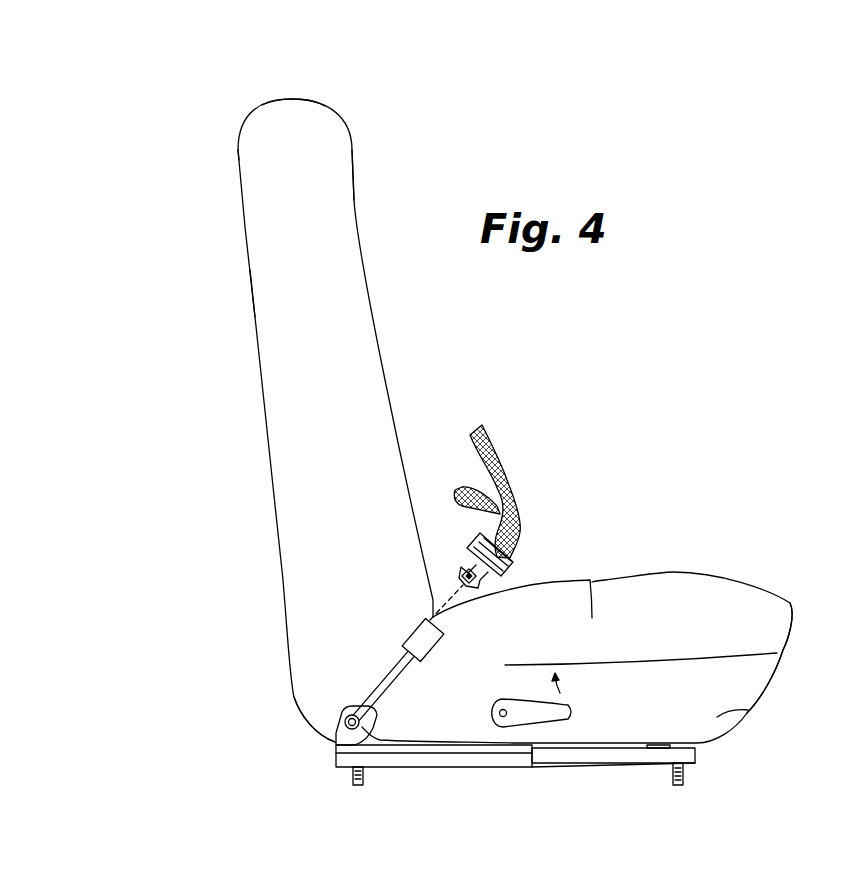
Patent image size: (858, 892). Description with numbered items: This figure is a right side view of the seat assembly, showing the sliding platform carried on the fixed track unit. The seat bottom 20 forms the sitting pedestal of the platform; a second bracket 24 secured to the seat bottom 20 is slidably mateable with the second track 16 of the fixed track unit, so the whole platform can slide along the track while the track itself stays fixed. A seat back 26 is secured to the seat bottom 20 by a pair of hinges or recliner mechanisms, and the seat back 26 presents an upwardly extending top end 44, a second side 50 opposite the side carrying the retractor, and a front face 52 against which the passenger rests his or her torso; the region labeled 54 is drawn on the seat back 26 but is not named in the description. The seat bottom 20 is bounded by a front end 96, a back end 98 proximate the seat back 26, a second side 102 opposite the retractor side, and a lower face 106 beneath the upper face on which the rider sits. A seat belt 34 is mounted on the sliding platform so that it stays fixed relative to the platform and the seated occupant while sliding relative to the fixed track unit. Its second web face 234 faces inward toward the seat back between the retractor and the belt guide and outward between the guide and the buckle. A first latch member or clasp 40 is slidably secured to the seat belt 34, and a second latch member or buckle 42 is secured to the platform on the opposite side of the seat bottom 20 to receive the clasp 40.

The second track 16 is at (697, 757).
The seat bottom 20 is at (692, 570).
The second bracket 24 is at (333, 748).
The seat back 26 is at (243, 227).
The seat belt 34 is at (498, 440).
The first latch member or clasp 40 is at (513, 572).
The second latch member or buckle 42 is at (432, 643).
The top end 44 is at (293, 100).
The second side 50 is at (257, 152).
The front face 52 is at (355, 192).
The side of seat back 54 is at (250, 275).
The front end 96 is at (795, 612).
The back end 98 is at (302, 712).
The second side 102 is at (733, 680).
The lower face 106 is at (560, 767).
The second web face 234 is at (513, 513).